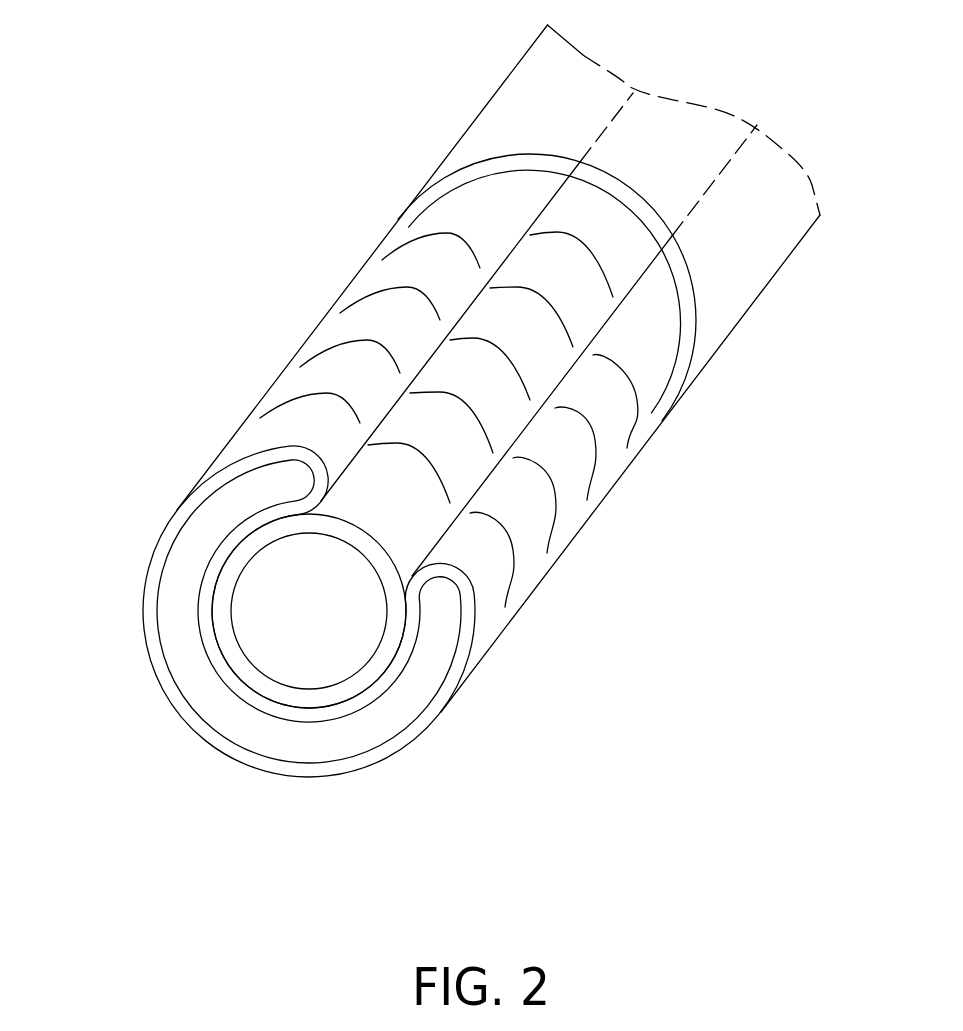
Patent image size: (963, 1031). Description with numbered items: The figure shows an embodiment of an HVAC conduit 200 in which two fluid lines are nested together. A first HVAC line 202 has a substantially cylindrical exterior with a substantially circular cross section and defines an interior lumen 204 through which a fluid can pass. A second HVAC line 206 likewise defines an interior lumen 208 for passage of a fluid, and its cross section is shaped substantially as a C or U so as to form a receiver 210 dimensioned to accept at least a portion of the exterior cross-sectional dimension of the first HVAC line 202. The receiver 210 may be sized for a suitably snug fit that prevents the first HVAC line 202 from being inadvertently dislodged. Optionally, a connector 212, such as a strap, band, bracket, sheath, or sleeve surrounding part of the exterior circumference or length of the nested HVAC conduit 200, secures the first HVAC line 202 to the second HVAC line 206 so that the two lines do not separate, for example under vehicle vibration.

The HVAC conduit 200 is at (252, 71).
The first HVAC line 202 is at (460, 383).
The interior lumen 204 is at (280, 642).
The second HVAC line 206 is at (612, 458).
The interior lumen 208 is at (432, 655).
The receiver 210 is at (236, 718).
The connector 212 is at (768, 235).